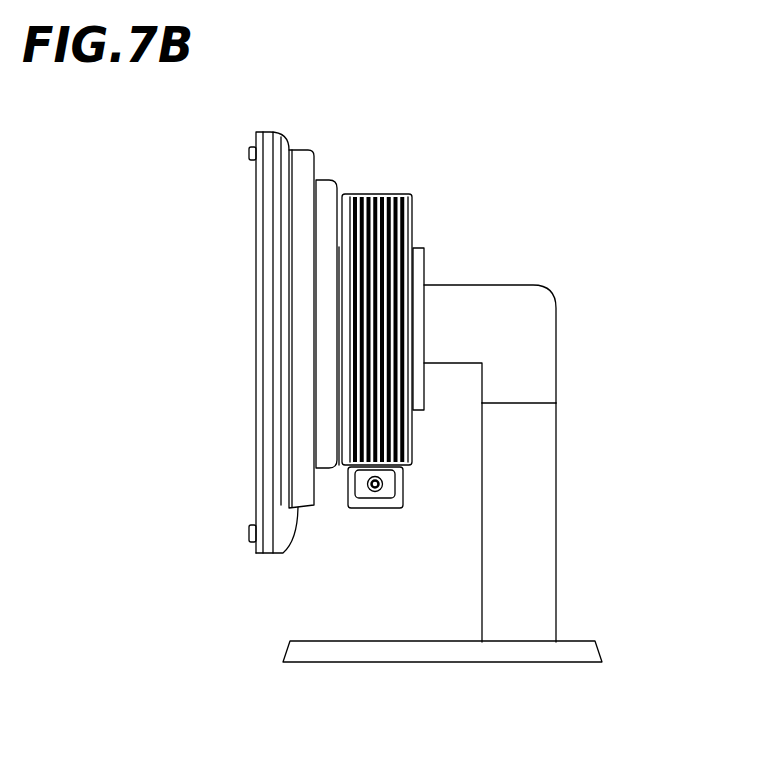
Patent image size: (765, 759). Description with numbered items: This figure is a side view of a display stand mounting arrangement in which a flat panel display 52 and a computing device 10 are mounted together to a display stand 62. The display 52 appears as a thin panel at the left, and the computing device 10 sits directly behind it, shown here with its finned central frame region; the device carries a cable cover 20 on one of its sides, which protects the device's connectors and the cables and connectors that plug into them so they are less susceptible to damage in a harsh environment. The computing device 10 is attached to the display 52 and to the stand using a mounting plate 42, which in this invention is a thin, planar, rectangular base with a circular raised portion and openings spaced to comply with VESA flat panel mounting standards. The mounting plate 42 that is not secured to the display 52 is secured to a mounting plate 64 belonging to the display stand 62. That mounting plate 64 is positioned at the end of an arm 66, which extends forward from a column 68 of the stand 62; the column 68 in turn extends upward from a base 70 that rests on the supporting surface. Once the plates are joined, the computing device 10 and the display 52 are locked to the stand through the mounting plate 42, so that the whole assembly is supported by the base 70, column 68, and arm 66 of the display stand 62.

The computing device 10 is at (330, 335).
The cable cover 20 is at (368, 510).
The mounting plate 42 is at (413, 245).
The display 52 is at (299, 118).
The display stand 62 is at (510, 443).
The mounting plate 64 is at (425, 260).
The arm 66 is at (503, 325).
The column 68 is at (532, 532).
The base 70 is at (578, 647).